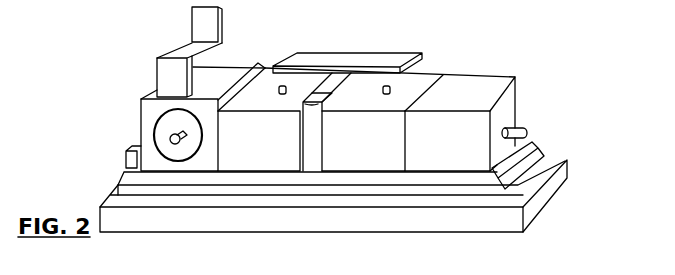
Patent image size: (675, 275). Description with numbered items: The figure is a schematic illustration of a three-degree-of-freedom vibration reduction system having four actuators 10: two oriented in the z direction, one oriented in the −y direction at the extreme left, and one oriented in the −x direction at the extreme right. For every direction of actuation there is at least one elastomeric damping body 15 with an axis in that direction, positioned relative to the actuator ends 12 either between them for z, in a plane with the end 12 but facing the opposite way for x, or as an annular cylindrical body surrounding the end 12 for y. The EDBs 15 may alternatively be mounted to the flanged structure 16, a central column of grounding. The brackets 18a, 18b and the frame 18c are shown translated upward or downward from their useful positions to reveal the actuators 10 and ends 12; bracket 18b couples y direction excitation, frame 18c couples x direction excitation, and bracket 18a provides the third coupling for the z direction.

The actuator 10 is at (222, 90).
The actuator end 12 is at (172, 136).
The elastomeric damping body (EDB) 15 is at (160, 143).
The flanged structure 16 is at (313, 148).
The bracket 18a is at (340, 60).
The bracket 18b is at (182, 48).
The frame 18c is at (272, 229).